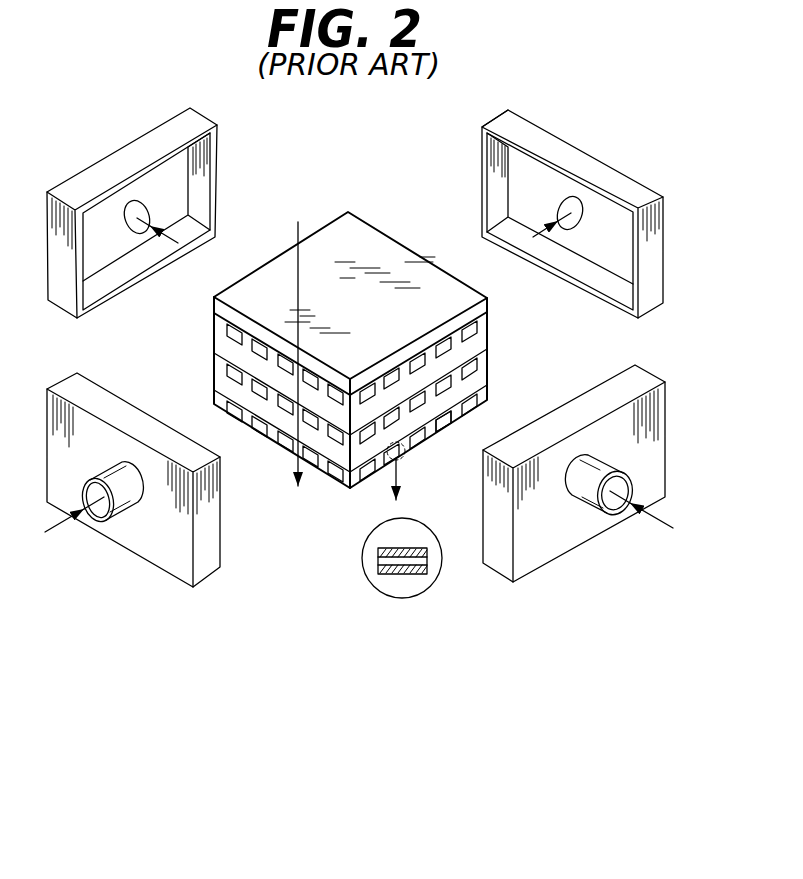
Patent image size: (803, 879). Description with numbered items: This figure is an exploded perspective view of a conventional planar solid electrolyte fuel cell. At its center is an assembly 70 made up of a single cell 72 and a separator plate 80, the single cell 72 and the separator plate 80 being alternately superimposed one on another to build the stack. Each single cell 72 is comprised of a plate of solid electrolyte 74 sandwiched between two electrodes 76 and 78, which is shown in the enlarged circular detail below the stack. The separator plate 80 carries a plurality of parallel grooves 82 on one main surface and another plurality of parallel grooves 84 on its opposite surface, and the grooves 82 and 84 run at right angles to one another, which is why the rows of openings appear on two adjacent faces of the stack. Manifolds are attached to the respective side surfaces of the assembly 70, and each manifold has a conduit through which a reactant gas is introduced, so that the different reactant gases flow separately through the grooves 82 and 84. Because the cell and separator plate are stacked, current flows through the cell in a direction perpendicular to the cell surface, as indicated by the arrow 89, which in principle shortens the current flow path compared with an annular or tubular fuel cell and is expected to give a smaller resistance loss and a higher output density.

The assembly 70 is at (388, 228).
The single cell 72 is at (427, 590).
The plate of solid electrolyte 74 is at (378, 561).
The electrode 76 is at (390, 548).
The electrode 78 is at (390, 575).
The separator plate 80 is at (478, 370).
The parallel grooves 82 is at (238, 372).
The parallel grooves 84 is at (447, 410).
The arrow 89 is at (298, 228).